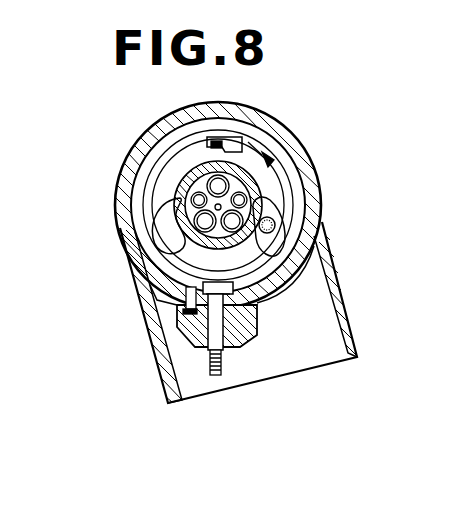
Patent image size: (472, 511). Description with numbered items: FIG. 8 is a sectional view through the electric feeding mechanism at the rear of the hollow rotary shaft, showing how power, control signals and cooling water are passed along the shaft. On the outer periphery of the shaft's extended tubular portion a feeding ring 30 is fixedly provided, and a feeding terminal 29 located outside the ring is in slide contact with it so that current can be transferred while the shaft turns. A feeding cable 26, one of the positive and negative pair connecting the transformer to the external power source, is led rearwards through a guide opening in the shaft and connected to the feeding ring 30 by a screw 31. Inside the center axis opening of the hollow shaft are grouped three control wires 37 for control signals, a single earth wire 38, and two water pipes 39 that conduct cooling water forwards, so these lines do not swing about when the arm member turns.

The feeding cable 26 is at (167, 177).
The feeding terminal 29 is at (221, 347).
The feeding ring 30 is at (138, 222).
The screw 31 is at (268, 155).
The control wire 37 is at (185, 172).
The earth wire 38 is at (172, 201).
The water pipe 39 is at (253, 270).